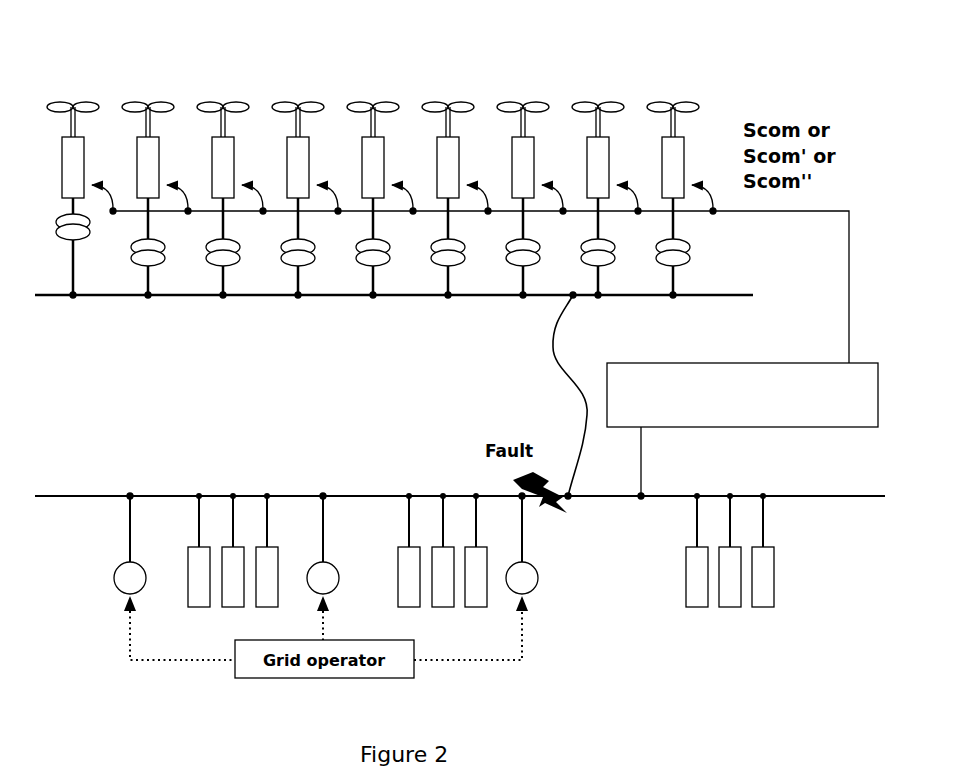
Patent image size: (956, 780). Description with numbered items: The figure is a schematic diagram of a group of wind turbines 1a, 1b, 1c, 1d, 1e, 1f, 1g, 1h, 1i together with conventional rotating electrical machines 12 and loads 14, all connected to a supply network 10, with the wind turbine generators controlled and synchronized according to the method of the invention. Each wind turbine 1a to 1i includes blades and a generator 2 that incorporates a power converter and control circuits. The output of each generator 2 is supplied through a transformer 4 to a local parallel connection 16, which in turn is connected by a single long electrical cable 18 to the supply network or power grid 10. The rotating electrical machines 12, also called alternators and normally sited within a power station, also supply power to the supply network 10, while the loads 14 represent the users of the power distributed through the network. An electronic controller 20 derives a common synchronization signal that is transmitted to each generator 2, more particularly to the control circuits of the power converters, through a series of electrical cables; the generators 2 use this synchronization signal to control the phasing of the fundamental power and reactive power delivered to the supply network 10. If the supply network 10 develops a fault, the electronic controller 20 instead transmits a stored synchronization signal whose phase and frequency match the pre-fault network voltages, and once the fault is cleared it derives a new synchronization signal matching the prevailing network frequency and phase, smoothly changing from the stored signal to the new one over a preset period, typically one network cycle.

The wind turbine 1a is at (70, 86).
The wind turbine 1b is at (145, 86).
The wind turbine 1c is at (220, 86).
The wind turbine 1d is at (295, 86).
The wind turbine 1e is at (370, 86).
The wind turbine 1f is at (445, 86).
The wind turbine 1g is at (520, 86).
The wind turbine 1h is at (595, 86).
The wind turbine 1i is at (670, 86).
The generator 2 is at (673, 153).
The transformer 4 is at (673, 255).
The supply network 10 is at (288, 494).
The rotating electrical machine 12 is at (115, 572).
The load 14 is at (758, 595).
The local parallel connection 16 is at (188, 296).
The electrical cable 18 is at (553, 332).
The electronic controller 20 is at (495, 355).